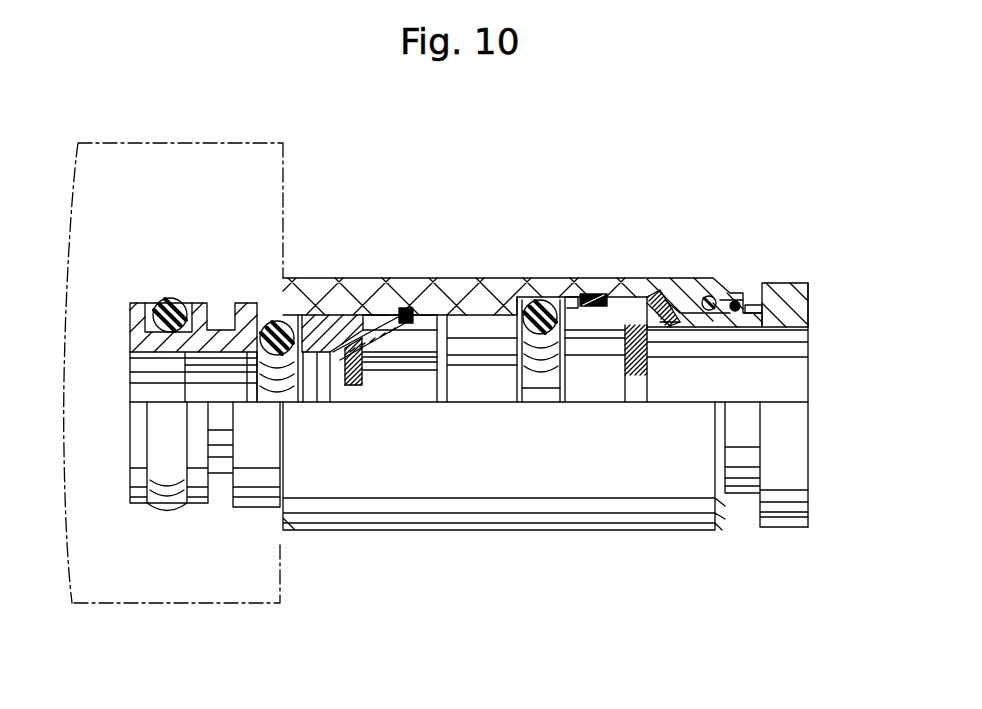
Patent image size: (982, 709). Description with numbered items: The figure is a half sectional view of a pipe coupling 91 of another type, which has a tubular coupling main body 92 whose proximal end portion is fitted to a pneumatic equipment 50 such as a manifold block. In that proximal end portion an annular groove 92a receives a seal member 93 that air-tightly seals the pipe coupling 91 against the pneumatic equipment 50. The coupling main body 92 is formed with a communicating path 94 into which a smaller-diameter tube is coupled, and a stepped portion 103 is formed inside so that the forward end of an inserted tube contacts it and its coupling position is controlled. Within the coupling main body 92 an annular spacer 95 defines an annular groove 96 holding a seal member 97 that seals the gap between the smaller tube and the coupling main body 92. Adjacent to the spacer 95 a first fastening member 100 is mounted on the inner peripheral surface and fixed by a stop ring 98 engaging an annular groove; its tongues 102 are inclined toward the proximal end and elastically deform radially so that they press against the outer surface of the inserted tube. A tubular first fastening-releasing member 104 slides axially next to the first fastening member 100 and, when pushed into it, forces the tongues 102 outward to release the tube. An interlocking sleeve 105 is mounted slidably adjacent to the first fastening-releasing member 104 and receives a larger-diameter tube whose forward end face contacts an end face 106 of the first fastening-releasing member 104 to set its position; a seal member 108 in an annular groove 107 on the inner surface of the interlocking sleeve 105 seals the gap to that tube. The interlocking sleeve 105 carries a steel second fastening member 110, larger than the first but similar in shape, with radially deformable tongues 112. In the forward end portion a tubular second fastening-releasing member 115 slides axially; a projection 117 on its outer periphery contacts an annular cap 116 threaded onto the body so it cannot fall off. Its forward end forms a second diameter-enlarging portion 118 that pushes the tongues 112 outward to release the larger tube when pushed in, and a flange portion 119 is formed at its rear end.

The pneumatic equipment 50 is at (283, 598).
The pipe coupling 91 is at (680, 278).
The coupling main body 92 is at (569, 298).
The annular groove 92a is at (187, 330).
The seal member 93 is at (163, 299).
The communicating path 94 is at (215, 380).
The annular spacer 95 is at (348, 300).
The annular groove 96 is at (317, 382).
The seal member 97 is at (288, 322).
The stop ring 98 is at (407, 318).
The first fastening member 100 is at (385, 300).
The tongues 102 is at (360, 383).
The stepped portion 103 is at (198, 420).
The first fastening-releasing member 104 is at (430, 325).
The interlocking sleeve 105 is at (620, 293).
The end face 106 is at (455, 378).
The annular groove 107 is at (541, 298).
The seal member 108 is at (537, 388).
The second fastening member 110 is at (660, 278).
The tongues 112 is at (645, 318).
The second fastening-releasing member 115 is at (758, 300).
The annular cap 116 is at (738, 294).
The projection 117 is at (709, 296).
The second diameter-enlarging portion 118 is at (680, 323).
The flange portion 119 is at (802, 283).